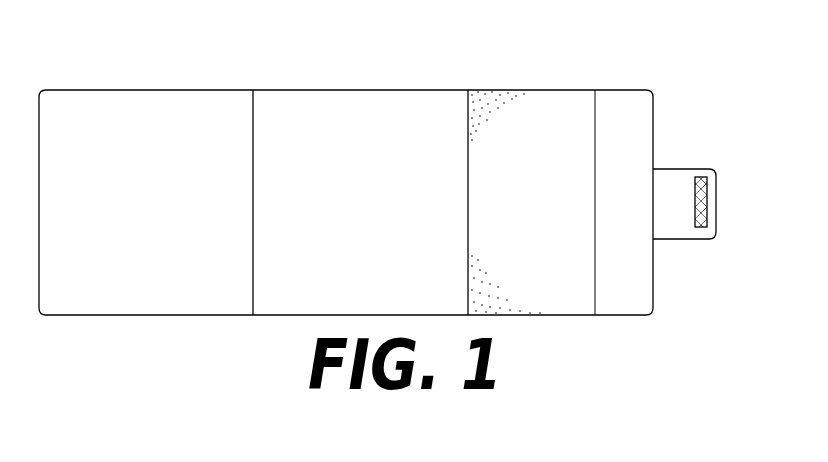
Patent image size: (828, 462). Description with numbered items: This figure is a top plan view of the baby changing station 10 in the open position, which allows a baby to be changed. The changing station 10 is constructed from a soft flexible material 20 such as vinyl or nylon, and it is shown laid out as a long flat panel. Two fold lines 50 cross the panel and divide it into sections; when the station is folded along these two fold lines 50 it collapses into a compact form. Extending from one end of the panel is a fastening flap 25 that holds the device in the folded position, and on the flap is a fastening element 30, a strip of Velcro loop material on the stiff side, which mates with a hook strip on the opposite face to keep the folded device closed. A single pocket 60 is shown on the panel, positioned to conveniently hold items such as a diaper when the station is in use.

The baby changing station 10 is at (150, 50).
The soft flexible material 20 is at (152, 316).
The fastening flap 25 is at (687, 240).
The fastening element 30 is at (698, 176).
The fold lines 50 is at (253, 100).
The pocket 60 is at (569, 304).